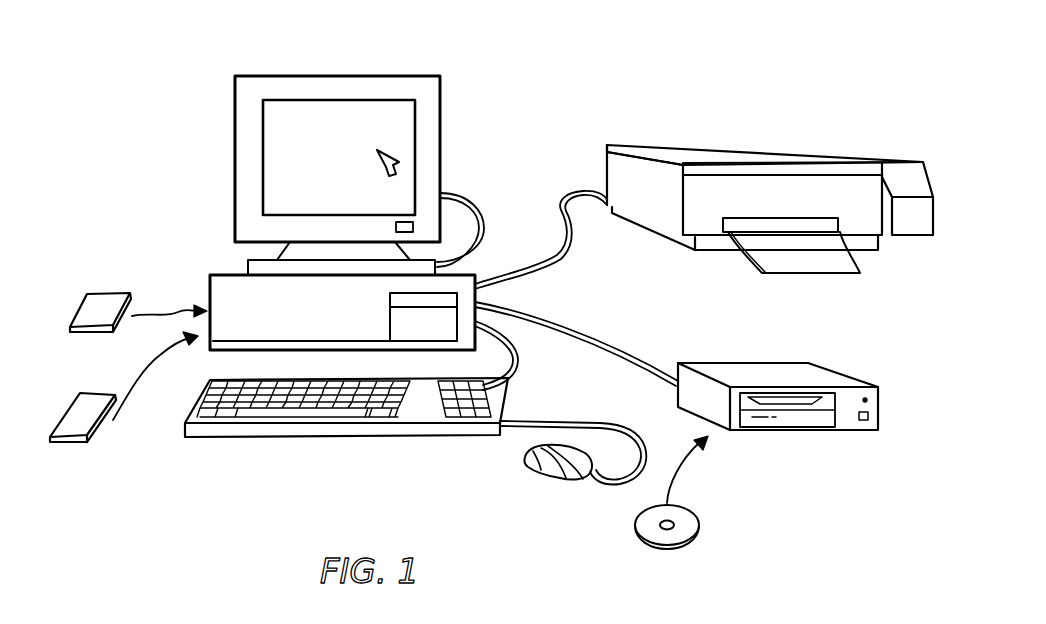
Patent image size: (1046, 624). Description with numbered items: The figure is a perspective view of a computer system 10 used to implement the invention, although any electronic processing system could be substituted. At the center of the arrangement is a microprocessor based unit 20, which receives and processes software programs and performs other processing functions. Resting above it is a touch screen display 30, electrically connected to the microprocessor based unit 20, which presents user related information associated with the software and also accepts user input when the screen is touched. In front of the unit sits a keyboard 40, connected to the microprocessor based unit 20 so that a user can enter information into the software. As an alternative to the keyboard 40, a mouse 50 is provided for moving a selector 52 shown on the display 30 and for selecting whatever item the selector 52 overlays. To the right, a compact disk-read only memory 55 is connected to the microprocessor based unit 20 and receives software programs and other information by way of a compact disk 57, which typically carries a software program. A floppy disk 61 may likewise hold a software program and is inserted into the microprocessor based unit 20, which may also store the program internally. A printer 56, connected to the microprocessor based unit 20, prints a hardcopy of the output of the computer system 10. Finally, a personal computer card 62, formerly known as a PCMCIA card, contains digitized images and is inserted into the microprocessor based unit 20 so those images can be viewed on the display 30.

The computer system 10 is at (536, 97).
The microprocessor based unit 20 is at (225, 275).
The touch screen display 30 is at (358, 75).
The keyboard 40 is at (287, 437).
The mouse 50 is at (557, 475).
The selector 52 is at (400, 160).
The compact disk-read only memory (CD-ROM) 55 is at (728, 363).
The printer 56 is at (683, 143).
The compact disk 57 is at (700, 520).
The floppy disk 61 is at (97, 295).
The personal computer card (PC card) 62 is at (98, 432).